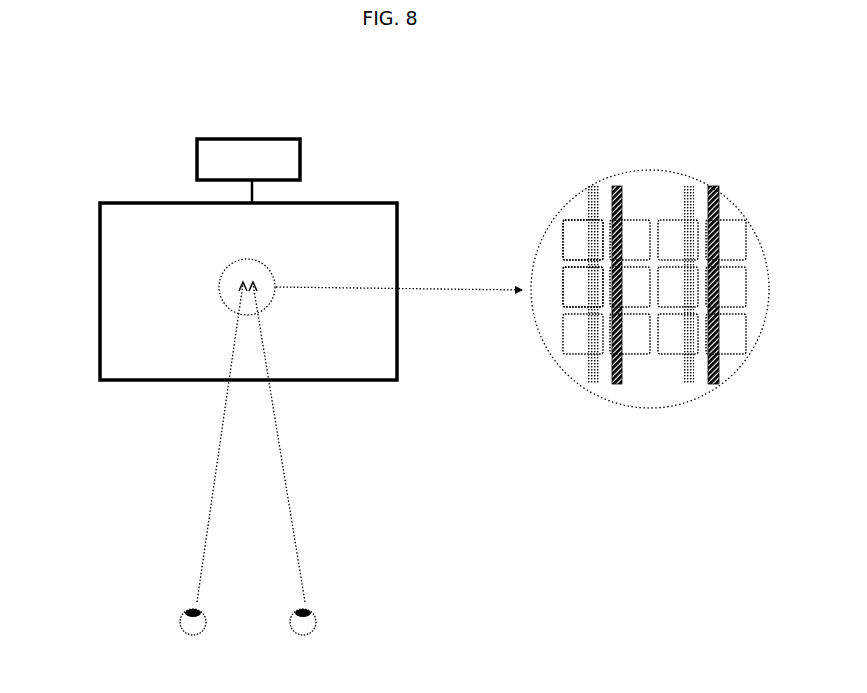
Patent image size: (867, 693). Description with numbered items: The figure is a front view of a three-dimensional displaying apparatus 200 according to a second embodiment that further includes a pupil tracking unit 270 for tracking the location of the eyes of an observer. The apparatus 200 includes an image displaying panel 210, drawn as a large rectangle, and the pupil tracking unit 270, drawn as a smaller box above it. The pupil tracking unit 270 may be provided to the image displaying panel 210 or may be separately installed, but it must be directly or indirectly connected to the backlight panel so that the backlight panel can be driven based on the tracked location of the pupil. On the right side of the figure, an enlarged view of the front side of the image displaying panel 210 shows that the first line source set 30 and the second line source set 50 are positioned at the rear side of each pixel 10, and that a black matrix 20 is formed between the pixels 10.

The pixel 10 is at (582, 232).
The black matrix 20 is at (578, 262).
The first line source set 30 is at (683, 390).
The second line source set 50 is at (622, 388).
The 3-dimensional displaying apparatus 200 is at (65, 572).
The image displaying panel 210 is at (100, 354).
The pupil tracking unit 270 is at (273, 139).